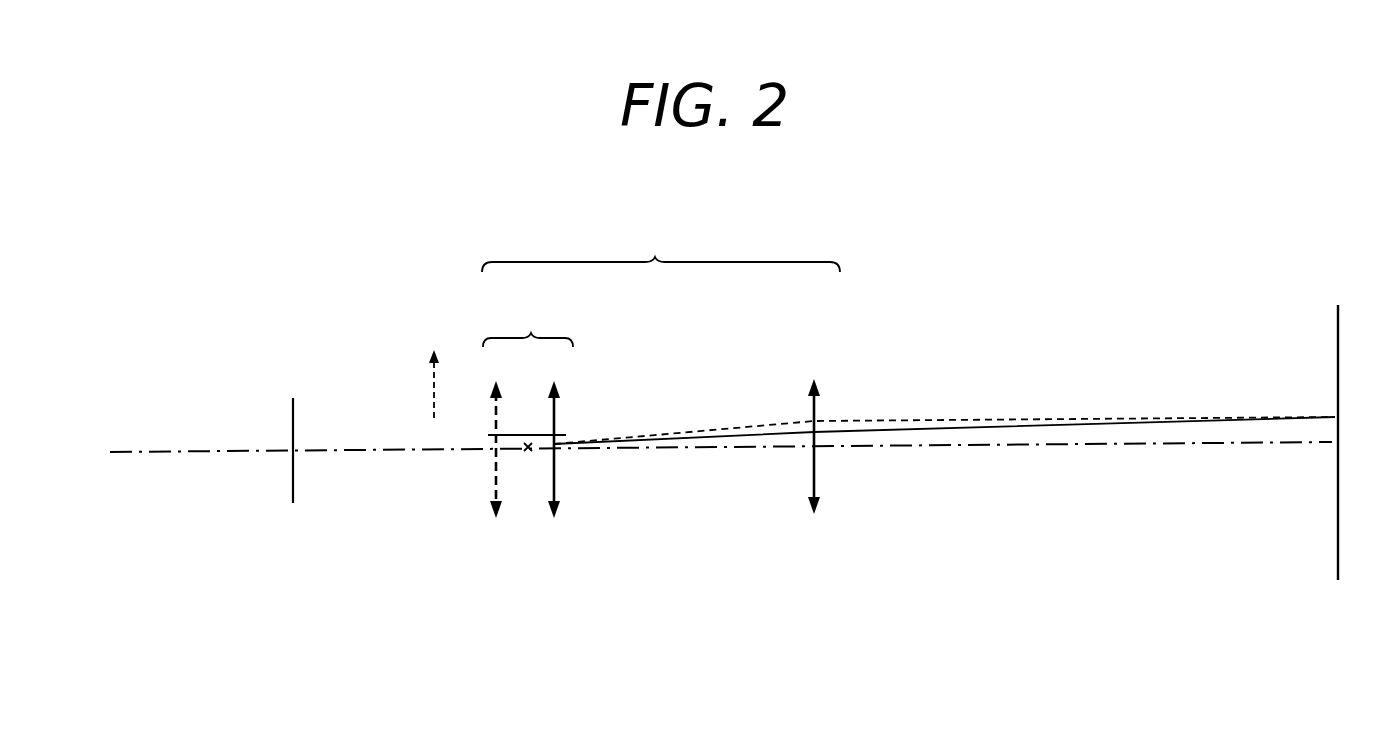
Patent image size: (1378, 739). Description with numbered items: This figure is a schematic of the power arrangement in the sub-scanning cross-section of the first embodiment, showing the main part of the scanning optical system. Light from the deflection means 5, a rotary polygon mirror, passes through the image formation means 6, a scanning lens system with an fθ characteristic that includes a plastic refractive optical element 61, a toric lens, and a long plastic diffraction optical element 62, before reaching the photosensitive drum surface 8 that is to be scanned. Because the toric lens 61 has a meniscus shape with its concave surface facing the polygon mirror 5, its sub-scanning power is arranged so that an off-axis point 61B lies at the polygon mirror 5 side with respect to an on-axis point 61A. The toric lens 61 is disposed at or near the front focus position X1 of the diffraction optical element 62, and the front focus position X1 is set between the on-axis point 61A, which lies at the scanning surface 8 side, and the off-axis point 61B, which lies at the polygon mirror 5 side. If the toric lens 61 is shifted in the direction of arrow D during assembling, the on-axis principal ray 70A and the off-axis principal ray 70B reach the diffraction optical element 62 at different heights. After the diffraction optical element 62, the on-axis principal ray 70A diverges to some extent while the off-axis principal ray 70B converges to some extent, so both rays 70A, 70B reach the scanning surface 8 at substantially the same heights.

The deflection means 5 is at (296, 412).
The image formation means 6 is at (661, 251).
The refractive optical element 61 is at (528, 369).
The on-axis point 61A is at (559, 434).
The off-axis point 61B is at (499, 434).
The diffraction optical element 62 is at (815, 382).
The on-axis principal ray 70A is at (947, 430).
The off-axis principal ray 70B is at (940, 419).
The photosensitive drum surface 8 is at (1340, 330).
The front focus position X1 is at (529, 455).
The arrow D is at (435, 368).